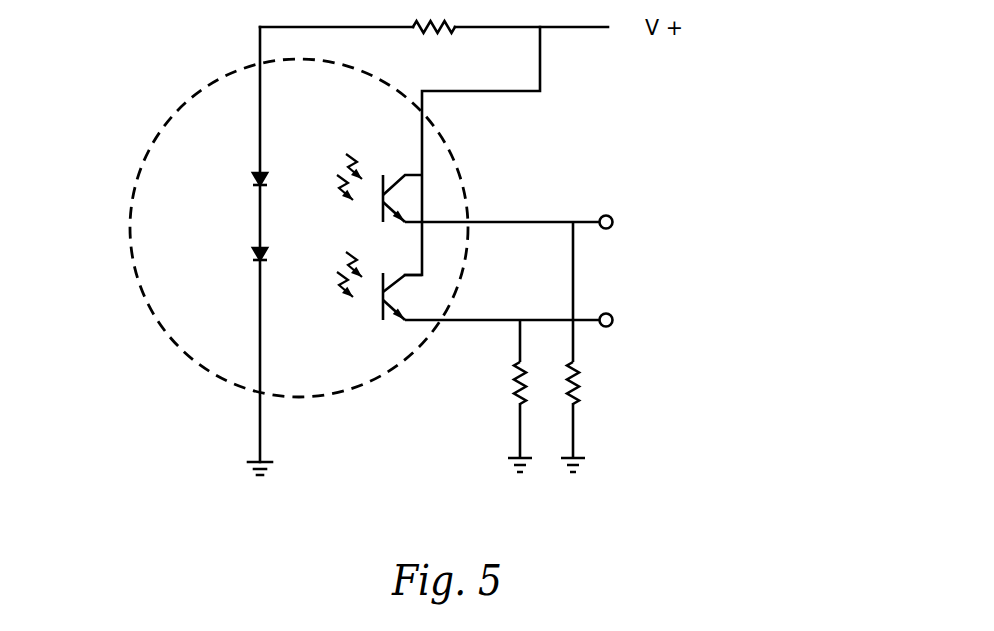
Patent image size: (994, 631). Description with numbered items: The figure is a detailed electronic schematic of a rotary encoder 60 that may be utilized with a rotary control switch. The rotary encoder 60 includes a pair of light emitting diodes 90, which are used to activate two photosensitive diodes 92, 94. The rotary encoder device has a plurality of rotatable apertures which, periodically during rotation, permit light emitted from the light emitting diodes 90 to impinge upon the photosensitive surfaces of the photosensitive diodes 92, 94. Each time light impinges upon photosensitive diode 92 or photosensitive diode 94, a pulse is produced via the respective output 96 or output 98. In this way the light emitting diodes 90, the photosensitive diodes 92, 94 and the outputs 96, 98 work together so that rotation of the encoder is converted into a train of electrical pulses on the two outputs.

The rotary encoder 60 is at (150, 430).
The light emitting diodes 90 is at (240, 185).
The photosensitive diode 92 is at (398, 336).
The photosensitive diode 94 is at (390, 155).
The output 96 is at (556, 212).
The output 98 is at (589, 333).